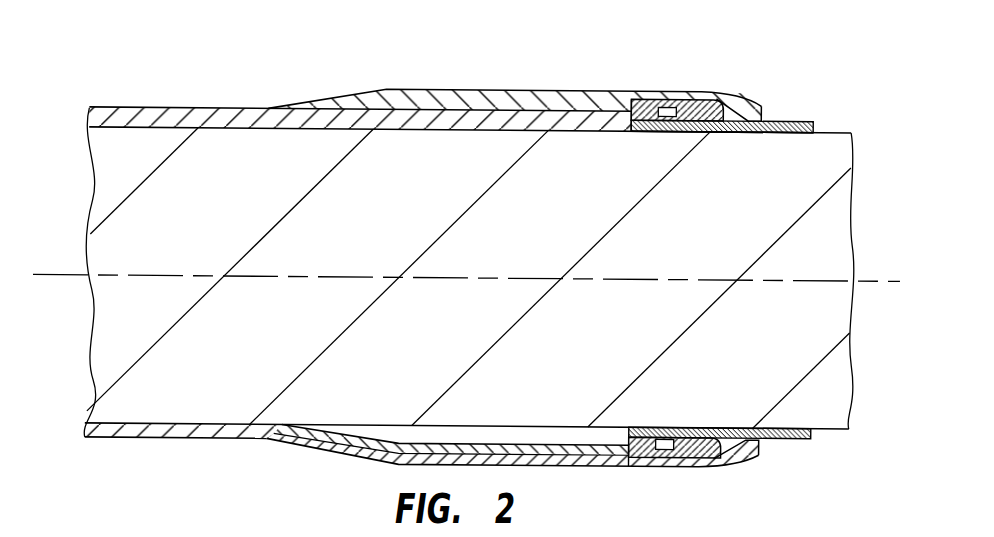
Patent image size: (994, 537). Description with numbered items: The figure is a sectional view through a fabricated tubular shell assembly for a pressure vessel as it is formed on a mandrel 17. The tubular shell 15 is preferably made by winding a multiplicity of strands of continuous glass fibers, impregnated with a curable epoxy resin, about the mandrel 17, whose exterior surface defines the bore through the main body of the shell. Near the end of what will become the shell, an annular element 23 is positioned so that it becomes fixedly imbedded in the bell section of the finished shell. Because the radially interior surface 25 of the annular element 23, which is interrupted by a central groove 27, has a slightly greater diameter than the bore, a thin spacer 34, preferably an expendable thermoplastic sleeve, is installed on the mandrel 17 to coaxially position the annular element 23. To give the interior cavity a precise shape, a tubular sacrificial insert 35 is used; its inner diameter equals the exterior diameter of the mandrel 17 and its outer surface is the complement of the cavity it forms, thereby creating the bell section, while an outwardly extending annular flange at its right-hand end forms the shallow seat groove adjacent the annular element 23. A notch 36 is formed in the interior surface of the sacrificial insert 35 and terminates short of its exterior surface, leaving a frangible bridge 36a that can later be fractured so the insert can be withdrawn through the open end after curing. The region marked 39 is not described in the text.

The tubular shell 15 is at (211, 64).
The mandrel 17 is at (132, 238).
The annular element 23 is at (686, 95).
The radially interior surface 25 is at (717, 128).
The central groove 27 is at (669, 433).
The spacer 34 is at (801, 116).
The sacrificial insert 35 is at (474, 110).
The notch 36 is at (403, 428).
The frangible bridge 36a is at (557, 433).
The annular recess 39 is at (760, 108).